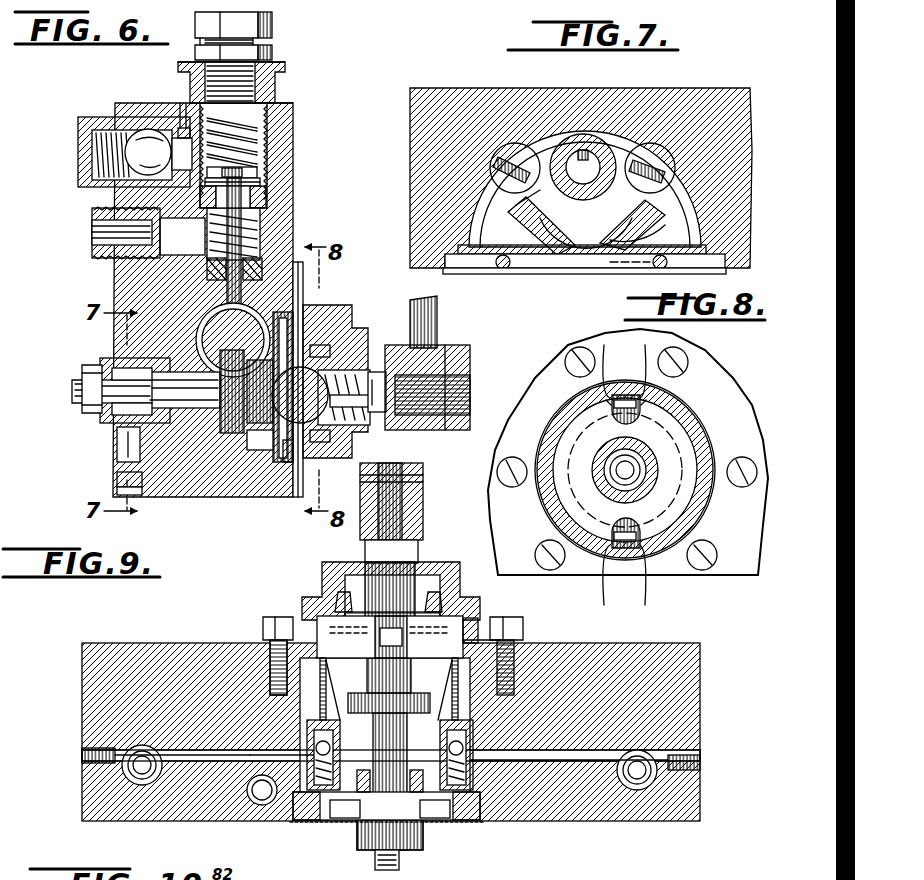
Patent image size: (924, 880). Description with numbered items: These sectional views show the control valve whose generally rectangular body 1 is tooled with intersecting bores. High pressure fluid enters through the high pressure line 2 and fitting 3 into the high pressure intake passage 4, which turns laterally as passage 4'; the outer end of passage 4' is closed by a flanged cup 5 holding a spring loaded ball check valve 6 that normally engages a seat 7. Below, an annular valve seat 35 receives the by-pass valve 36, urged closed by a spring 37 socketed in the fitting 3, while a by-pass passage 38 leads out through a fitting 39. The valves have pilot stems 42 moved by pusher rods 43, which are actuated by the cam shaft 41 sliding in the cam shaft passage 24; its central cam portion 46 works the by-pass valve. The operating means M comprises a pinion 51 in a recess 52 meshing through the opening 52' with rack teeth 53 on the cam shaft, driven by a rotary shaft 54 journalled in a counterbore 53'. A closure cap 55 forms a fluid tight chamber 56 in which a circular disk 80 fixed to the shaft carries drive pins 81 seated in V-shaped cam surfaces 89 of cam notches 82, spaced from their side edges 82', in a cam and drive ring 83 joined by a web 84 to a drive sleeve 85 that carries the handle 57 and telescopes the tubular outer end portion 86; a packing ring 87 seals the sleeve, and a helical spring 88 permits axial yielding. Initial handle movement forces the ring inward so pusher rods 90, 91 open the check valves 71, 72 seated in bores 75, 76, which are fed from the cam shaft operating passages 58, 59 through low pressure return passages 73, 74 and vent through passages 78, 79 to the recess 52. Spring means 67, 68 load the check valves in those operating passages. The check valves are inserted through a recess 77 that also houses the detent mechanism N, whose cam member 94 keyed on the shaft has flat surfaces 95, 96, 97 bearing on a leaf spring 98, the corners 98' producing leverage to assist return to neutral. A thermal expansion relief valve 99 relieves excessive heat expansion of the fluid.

In FIG. 6, the body 1 is at (293, 125).
In FIG. 7, the body 1 is at (738, 96).
In FIG. 8, the body 1 is at (705, 360).
In FIG. 6, the high pressure line 2 is at (276, 26).
In FIG. 6, the fitting 3 is at (276, 98).
In FIG. 6, the high pressure intake passage 4 is at (244, 90).
In FIG. 6, the lateral intake passage 4' is at (161, 98).
In FIG. 6, the flanged cup 5 is at (95, 120).
In FIG. 6, the ball check valve 6 is at (142, 152).
In FIG. 6, the seat 7 is at (182, 150).
In FIG. 6, the cam shaft passage 24 is at (228, 290).
In FIG. 6, the annular valve seat 35 is at (268, 190).
In FIG. 6, the high pressure by-pass valve 36 is at (258, 180).
In FIG. 6, the spring 37 is at (262, 148).
In FIG. 6, the by-pass passage 38 is at (250, 248).
In FIG. 6, the fitting 39 is at (94, 210).
In FIG. 6, the cam shaft 41 is at (228, 335).
In FIG. 6, the pilot stem 42 is at (262, 198).
In FIG. 6, the pusher rod 43 is at (258, 228).
In FIG. 6, the cam portion 46 is at (220, 318).
In FIG. 6, the pinion 51 is at (232, 408).
In FIG. 6, the recess 52 is at (233, 448).
In FIG. 6, the opening 52' is at (346, 378).
In FIG. 6, the rack teeth 53 is at (151, 459).
In FIG. 6, the counterbore 53' is at (154, 451).
In FIG. 6, the rotary shaft 54 is at (172, 430).
In FIG. 7, the rotary shaft 54 is at (592, 158).
In FIG. 9, the rotary shaft 54 is at (385, 780).
In FIG. 6, the closure cap 55 is at (303, 272).
In FIG. 8, the closure cap 55 is at (700, 420).
In FIG. 9, the closure cap 55 is at (335, 570).
In FIG. 6, the chamber 56 is at (290, 462).
In FIG. 9, the chamber 56 is at (472, 632).
In FIG. 6, the handle 57 is at (436, 320).
In FIG. 9, the handle 57 is at (424, 505).
In FIG. 9, the cam shaft operating passage 58 is at (140, 778).
In FIG. 9, the cam shaft operating passage 59 is at (645, 786).
In FIG. 9, the spring means 67 is at (135, 762).
In FIG. 9, the spring means 68 is at (655, 778).
In FIG. 9, the check valve 71 is at (312, 740).
In FIG. 9, the check valve 72 is at (478, 745).
In FIG. 9, the low pressure return passage 73 is at (250, 750).
In FIG. 9, the low pressure return passage 74 is at (570, 749).
In FIG. 9, the bore 75 is at (340, 770).
In FIG. 9, the bore 76 is at (436, 770).
In FIG. 6, the recess 77 is at (125, 360).
In FIG. 7, the recess 77 is at (594, 128).
In FIG. 9, the recess 77 is at (300, 812).
In FIG. 9, the passage 78 is at (328, 690).
In FIG. 9, the passage 79 is at (452, 690).
In FIG. 6, the circular disk 80 is at (258, 435).
In FIG. 8, the circular disk 80 is at (625, 470).
In FIG. 9, the circular disk 80 is at (385, 600).
In FIG. 6, the drive pin 81 is at (283, 440).
In FIG. 8, the drive pin 81 is at (624, 395).
In FIG. 9, the drive pin 81 is at (388, 642).
In FIG. 6, the cam notch 82 is at (340, 395).
In FIG. 8, the cam notch 82 is at (659, 501).
In FIG. 9, the cam notch 82 is at (407, 580).
In FIG. 8, the side edge 82' is at (612, 490).
In FIG. 9, the side edge 82' is at (410, 587).
In FIG. 6, the cam and drive ring 83 is at (278, 430).
In FIG. 8, the cam and drive ring 83 is at (645, 478).
In FIG. 9, the cam and drive ring 83 is at (480, 640).
In FIG. 6, the web 84 is at (330, 342).
In FIG. 8, the web 84 is at (665, 435).
In FIG. 6, the drive sleeve 85 is at (330, 365).
In FIG. 6, the tubular outer end portion 86 is at (360, 380).
In FIG. 8, the tubular outer end portion 86 is at (640, 482).
In FIG. 6, the packing ring 87 is at (355, 447).
In FIG. 8, the packing ring 87 is at (655, 465).
In FIG. 6, the helical spring 88 is at (382, 430).
In FIG. 8, the V-shaped cam surface 89 is at (624, 482).
In FIG. 9, the V-shaped cam surface 89 is at (375, 640).
In FIG. 9, the pusher rod 90 is at (335, 695).
In FIG. 9, the pusher rod 91 is at (462, 695).
In FIG. 6, the cam member 94 is at (118, 446).
In FIG. 7, the cam member 94 is at (655, 210).
In FIG. 9, the cam member 94 is at (365, 800).
In FIG. 7, the flat surface 95 is at (535, 228).
In FIG. 7, the flat surface 96 is at (572, 254).
In FIG. 7, the flat surface 97 is at (649, 235).
In FIG. 6, the leaf spring 98 is at (93, 476).
In FIG. 7, the leaf spring 98 is at (584, 277).
In FIG. 9, the leaf spring 98 is at (384, 833).
In FIG. 7, the corner 98' is at (604, 209).
In FIG. 9, the thermal expansion relief valve 99 is at (258, 803).
In FIG. 6, the detent mechanism N is at (75, 345).
In FIG. 7, the detent mechanism N is at (580, 118).
In FIG. 9, the detent mechanism N is at (420, 840).
In FIG. 6, the operating means M is at (455, 347).
In FIG. 9, the operating means M is at (438, 540).